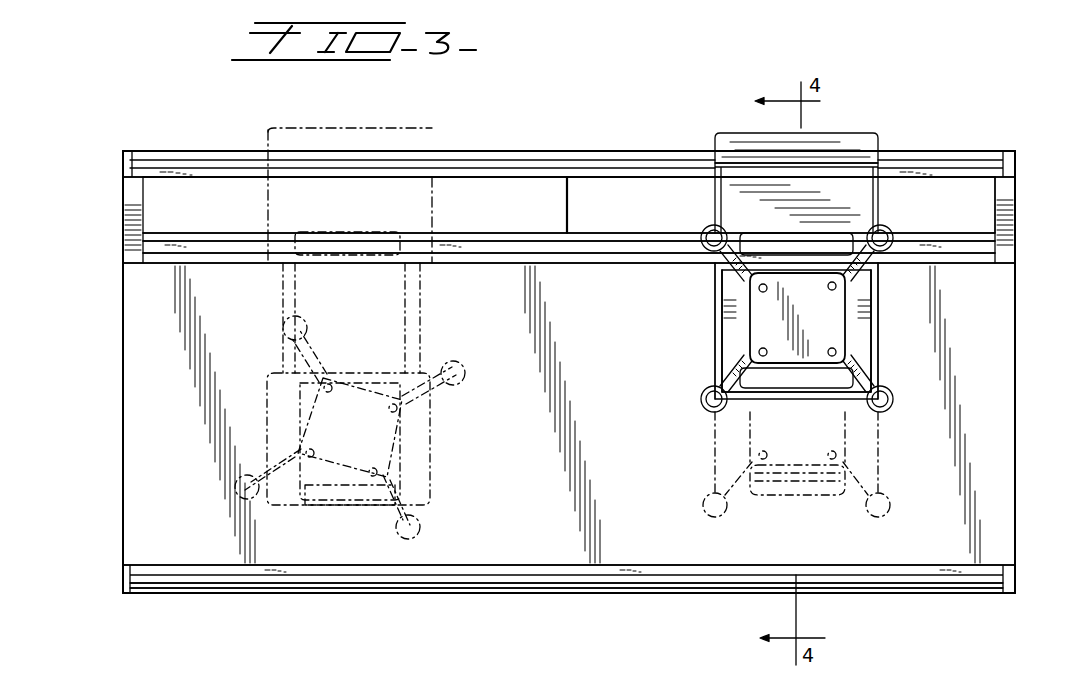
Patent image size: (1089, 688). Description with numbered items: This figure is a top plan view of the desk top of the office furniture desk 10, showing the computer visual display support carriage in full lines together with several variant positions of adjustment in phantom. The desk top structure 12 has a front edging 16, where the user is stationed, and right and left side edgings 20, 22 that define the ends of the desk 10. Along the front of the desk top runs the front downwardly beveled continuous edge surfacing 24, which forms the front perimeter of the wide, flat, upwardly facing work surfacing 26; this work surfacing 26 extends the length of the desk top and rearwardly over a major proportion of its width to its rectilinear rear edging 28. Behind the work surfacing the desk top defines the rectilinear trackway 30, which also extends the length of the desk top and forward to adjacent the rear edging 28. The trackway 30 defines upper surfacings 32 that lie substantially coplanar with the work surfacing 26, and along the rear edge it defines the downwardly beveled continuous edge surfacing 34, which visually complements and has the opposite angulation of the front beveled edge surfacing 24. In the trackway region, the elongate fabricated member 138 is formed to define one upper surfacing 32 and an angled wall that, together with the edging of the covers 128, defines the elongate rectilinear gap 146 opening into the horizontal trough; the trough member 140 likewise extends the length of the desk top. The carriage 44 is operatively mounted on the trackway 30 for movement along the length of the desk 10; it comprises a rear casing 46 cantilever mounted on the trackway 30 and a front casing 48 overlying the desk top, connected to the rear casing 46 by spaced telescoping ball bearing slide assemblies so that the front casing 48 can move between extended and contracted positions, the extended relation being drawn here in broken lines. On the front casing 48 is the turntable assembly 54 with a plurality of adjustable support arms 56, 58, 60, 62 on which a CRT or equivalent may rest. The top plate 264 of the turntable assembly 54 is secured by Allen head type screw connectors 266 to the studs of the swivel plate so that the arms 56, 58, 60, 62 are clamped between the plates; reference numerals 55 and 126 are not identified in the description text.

The office furniture desk 10 is at (1030, 130).
The desk top structure 12 is at (1020, 461).
The front edging 16 is at (655, 592).
The right side edging 20 is at (1016, 533).
The left side edging 22 is at (130, 467).
The front downwardly beveled continuous edge surfacing 24 is at (555, 588).
The work surfacing 26 is at (473, 545).
The rear edging of the work surfacing 28 is at (492, 262).
The trackway 30 is at (958, 160).
The upper surfacings 32 is at (160, 248).
The downwardly beveled continuous edge surfacing 34 is at (196, 160).
The carriage 44 is at (890, 132).
The rear casing 46 is at (835, 150).
The front casing 48 is at (738, 300).
The turntable assembly 54 is at (853, 328).
The plate center 55 is at (810, 322).
The adjustable support arm 56 is at (730, 236).
The adjustable support arm 58 is at (718, 375).
The adjustable support arm 60 is at (882, 386).
The adjustable support arm 62 is at (858, 248).
The rail section 126 is at (520, 200).
The cover 128 is at (611, 215).
The elongate fabricated member 138 is at (510, 255).
The trough member 140 is at (597, 247).
The elongate rectilinear gap 146 is at (648, 232).
The top plate 264 is at (880, 290).
The Allen head type screw connectors 266 is at (838, 352).